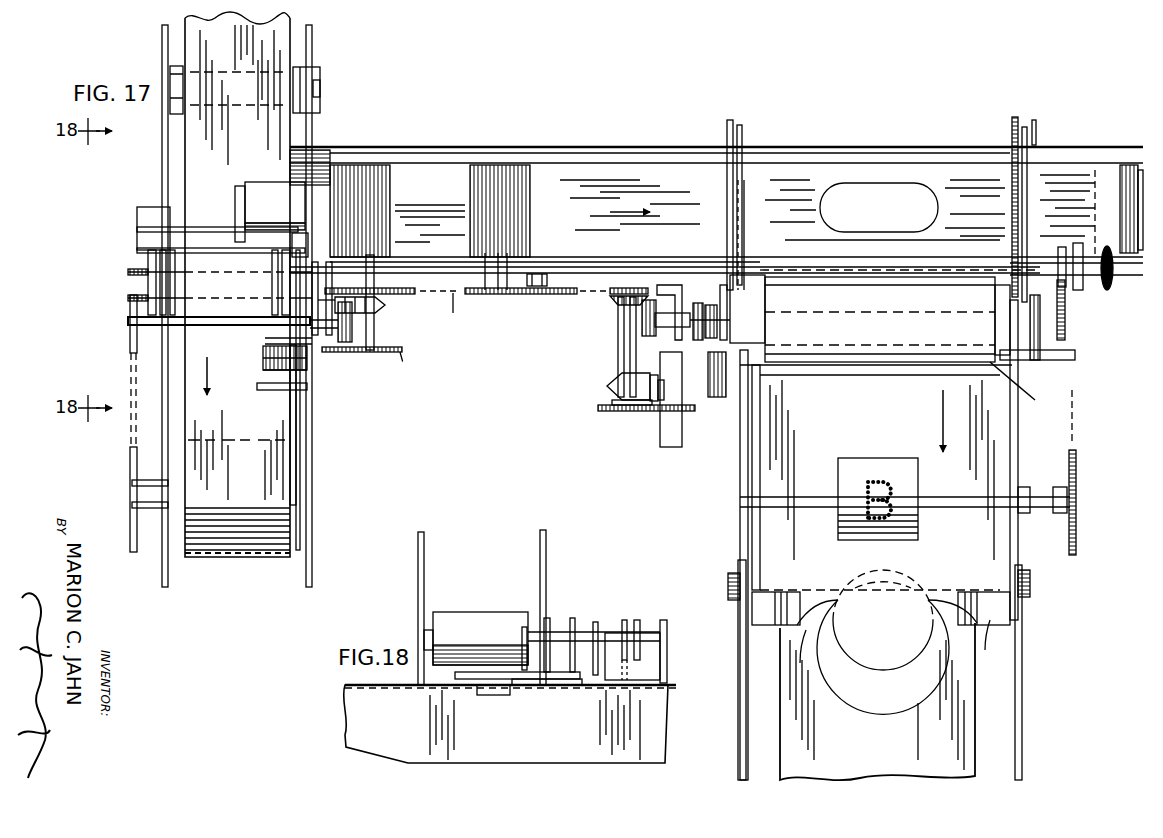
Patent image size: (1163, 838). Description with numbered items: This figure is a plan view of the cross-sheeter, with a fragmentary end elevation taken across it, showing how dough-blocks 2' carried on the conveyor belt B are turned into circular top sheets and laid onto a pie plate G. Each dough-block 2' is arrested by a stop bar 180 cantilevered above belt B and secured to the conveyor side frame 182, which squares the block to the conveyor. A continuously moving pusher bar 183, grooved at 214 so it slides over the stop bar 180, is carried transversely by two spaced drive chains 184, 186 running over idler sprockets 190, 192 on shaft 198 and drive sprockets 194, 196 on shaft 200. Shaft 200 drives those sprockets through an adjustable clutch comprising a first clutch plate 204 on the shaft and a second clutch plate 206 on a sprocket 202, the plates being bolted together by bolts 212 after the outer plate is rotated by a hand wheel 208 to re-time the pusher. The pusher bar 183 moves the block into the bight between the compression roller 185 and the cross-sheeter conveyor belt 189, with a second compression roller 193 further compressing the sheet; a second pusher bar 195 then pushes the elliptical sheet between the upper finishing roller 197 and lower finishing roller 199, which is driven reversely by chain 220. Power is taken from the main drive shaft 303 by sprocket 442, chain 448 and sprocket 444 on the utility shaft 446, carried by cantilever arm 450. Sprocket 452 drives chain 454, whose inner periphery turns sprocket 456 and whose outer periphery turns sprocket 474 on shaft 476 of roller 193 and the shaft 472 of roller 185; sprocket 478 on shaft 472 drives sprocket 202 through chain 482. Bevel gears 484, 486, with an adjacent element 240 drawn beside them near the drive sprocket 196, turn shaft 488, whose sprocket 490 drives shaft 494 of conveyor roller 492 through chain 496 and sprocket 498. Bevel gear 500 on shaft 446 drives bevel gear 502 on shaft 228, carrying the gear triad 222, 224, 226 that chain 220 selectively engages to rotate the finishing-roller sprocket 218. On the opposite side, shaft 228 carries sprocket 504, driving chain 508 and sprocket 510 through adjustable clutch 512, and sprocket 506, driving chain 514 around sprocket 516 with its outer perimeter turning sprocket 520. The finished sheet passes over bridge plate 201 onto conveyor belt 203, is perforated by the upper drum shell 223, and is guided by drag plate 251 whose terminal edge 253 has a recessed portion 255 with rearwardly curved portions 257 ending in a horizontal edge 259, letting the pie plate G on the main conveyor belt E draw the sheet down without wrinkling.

In FIG. 17, the conveyor side frame 182 is at (165, 174).
In FIG. 18, the conveyor side frame 182 is at (565, 748).
In FIG. 17, the pusher bar 183 is at (238, 196).
In FIG. 18, the pusher bar 183 is at (575, 686).
In FIG. 17, the dough-block 2' is at (275, 193).
In FIG. 17, the stop bar 180 is at (208, 228).
In FIG. 18, the stop bar 180 is at (503, 695).
In FIG. 17, the shaft 198 is at (148, 251).
In FIG. 17, the drive sprocket 194 is at (300, 258).
In FIG. 17, the idler sprocket 190 is at (145, 270).
In FIG. 18, the idler sprocket 190 is at (548, 620).
In FIG. 17, the idler sprocket 192 is at (145, 298).
In FIG. 18, the idler sprocket 192 is at (577, 622).
In FIG. 17, the drive chain 184 is at (128, 273).
In FIG. 17, the drive chain 186 is at (130, 300).
In FIG. 17, the sprocket 490 is at (128, 322).
In FIG. 17, the shaft 488 is at (152, 330).
In FIG. 17, the chain 496 is at (130, 432).
In FIG. 17, the conveyor roller 492 is at (190, 449).
In FIG. 17, the sprocket 498 is at (132, 488).
In FIG. 17, the shaft 494 is at (155, 512).
In FIG. 17, the conveyor belt B is at (245, 560).
In FIG. 18, the conveyor belt B is at (390, 690).
In FIG. 17, the shaft 200 is at (280, 344).
In FIG. 18, the shaft 200 is at (606, 630).
In FIG. 17, the sprocket 202 is at (265, 355).
In FIG. 18, the sprocket 202 is at (625, 622).
In FIG. 17, the second clutch plate 206 is at (266, 367).
In FIG. 17, the first clutch plate 204 is at (268, 367).
In FIG. 17, the bolts 212 is at (262, 388).
In FIG. 17, the hand wheel 208 is at (290, 398).
In FIG. 18, the hand wheel 208 is at (664, 620).
In FIG. 17, the cross-sheeter conveyor belt 189 is at (435, 163).
In FIG. 17, the compression roller 185 is at (380, 168).
In FIG. 18, the compression roller 185 is at (470, 620).
In FIG. 17, the second compression roller 193 is at (498, 185).
In FIG. 17, the lower finishing roller 199 is at (798, 258).
In FIG. 17, the pusher bar 195 is at (960, 167).
In FIG. 17, the sprocket 510 is at (1078, 258).
In FIG. 17, the chain 508 is at (1058, 272).
In FIG. 17, the adjustable clutch 512 is at (1121, 269).
In FIG. 17, the sprocket 506 is at (1068, 322).
In FIG. 17, the sprocket 504 is at (1060, 343).
In FIG. 17, the sprocket 520 is at (1070, 366).
In FIG. 17, the upper finishing roller 197 is at (1020, 389).
In FIG. 17, the chain 514 is at (1075, 412).
In FIG. 17, the sprocket 516 is at (1076, 458).
In FIG. 17, the bridge plate 201 is at (837, 373).
In FIG. 17, the sprocket 218 is at (746, 233).
In FIG. 17, the conveyor belt 203 is at (765, 466).
In FIG. 17, the upper drum shell 223 is at (863, 468).
In FIG. 17, the terminal edge 253 is at (757, 627).
In FIG. 17, the drag plate 251 is at (1017, 625).
In FIG. 17, the main conveyor belt E is at (968, 726).
In FIG. 17, the pie plate G is at (925, 660).
In FIG. 17, the horizontal edge 259 is at (855, 599).
In FIG. 17, the recessed portion 255 is at (797, 661).
In FIG. 17, the rearwardly curved portions 257 is at (994, 646).
In FIG. 17, the sprocket 452 is at (625, 288).
In FIG. 17, the bevel gear 500 is at (612, 298).
In FIG. 17, the drive shaft 446 is at (618, 350).
In FIG. 17, the shaft 228 is at (655, 300).
In FIG. 17, the bevel gear 502 is at (681, 340).
In FIG. 17, the chain 220 is at (688, 300).
In FIG. 17, the gear 224 is at (697, 305).
In FIG. 17, the gear 226 is at (702, 300).
In FIG. 17, the gear 222 is at (708, 348).
In FIG. 17, the cantilever arm 450 is at (607, 385).
In FIG. 17, the sprocket 442 is at (660, 407).
In FIG. 17, the sprocket 444 is at (600, 408).
In FIG. 17, the chain 448 is at (640, 412).
In FIG. 17, the main drive shaft 303 is at (683, 437).
In FIG. 17, the sprocket 456 is at (400, 292).
In FIG. 17, the sprocket 474 is at (490, 295).
In FIG. 17, the shaft 476 is at (485, 266).
In FIG. 17, the chain 454 is at (458, 315).
In FIG. 17, the bevel gear 484 is at (390, 305).
In FIG. 17, the shaft 472 is at (375, 316).
In FIG. 17, the chain 482 is at (306, 345).
In FIG. 17, the bevel gear 486 is at (345, 352).
In FIG. 17, the sprocket 478 is at (400, 353).
In FIG. 17, the drive sprocket 196 is at (301, 304).
In FIG. 17, the gear 240 is at (324, 308).
In FIG. 18, the groove 214 is at (513, 680).